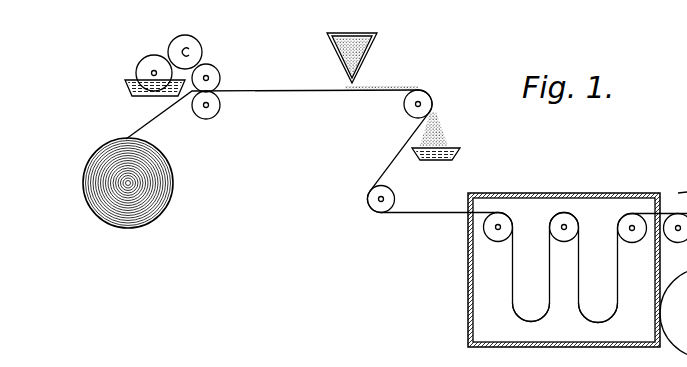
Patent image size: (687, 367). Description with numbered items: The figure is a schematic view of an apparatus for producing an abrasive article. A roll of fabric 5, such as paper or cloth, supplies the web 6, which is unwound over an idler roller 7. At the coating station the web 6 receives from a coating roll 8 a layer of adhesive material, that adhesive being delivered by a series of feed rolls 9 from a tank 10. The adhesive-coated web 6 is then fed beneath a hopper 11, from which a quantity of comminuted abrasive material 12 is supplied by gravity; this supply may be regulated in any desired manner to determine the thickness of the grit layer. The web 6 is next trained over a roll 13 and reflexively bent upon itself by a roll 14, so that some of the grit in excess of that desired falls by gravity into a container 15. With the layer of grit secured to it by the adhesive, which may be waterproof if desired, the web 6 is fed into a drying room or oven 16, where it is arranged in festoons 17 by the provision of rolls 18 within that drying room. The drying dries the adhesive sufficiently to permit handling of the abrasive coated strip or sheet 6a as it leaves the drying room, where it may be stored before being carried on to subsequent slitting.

The roll of fabric 5 is at (84, 181).
The web 6 is at (259, 92).
The abrasive coated strip or sheet 6a is at (673, 306).
The idler roller 7 is at (208, 112).
The coating roll 8 is at (220, 75).
The feed rolls 9 is at (171, 42).
The tank 10 is at (126, 88).
The hopper 11 is at (368, 54).
The comminuted abrasive material 12 is at (379, 88).
The roll 13 is at (404, 106).
The roll 14 is at (367, 199).
The container 15 is at (437, 161).
The drying room or oven 16 is at (572, 193).
The festoons 17 is at (587, 322).
The rolls 18 is at (507, 227).